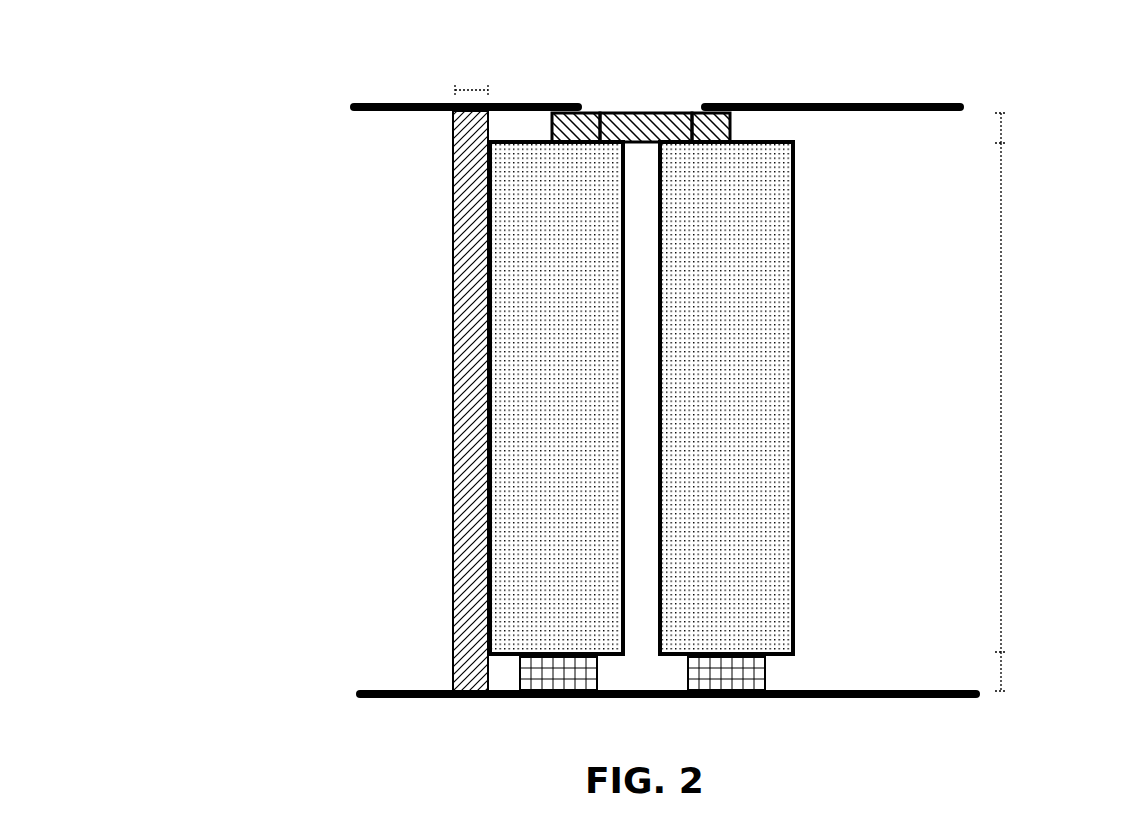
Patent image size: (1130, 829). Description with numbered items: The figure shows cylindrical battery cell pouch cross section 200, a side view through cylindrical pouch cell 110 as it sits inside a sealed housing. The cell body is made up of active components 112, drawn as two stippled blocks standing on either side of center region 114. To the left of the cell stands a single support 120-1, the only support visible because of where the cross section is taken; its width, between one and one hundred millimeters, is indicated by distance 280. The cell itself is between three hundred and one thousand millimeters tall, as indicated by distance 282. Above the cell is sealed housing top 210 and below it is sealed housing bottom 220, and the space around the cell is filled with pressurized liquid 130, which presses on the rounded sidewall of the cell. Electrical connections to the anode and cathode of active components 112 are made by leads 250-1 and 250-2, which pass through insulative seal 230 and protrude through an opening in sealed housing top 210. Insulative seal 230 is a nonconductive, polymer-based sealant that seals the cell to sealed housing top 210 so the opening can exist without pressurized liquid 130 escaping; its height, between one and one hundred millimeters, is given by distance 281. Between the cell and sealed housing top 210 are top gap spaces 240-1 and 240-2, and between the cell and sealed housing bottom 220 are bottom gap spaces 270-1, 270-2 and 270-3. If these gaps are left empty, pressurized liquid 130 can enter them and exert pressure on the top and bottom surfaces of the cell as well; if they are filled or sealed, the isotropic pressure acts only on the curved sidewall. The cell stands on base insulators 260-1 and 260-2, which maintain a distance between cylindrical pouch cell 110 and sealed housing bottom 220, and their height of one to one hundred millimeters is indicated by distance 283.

The cylindrical battery cell pouch cross section 200 is at (213, 84).
The cylindrical pouch cell 110 is at (862, 181).
The active components 112 is at (506, 214).
The center region 114 is at (628, 292).
The support 120-1 is at (451, 257).
The pressurized liquid 130 is at (369, 366).
The sealed housing top 210 is at (412, 104).
The sealed housing bottom 220 is at (376, 700).
The insulative seal 230 is at (665, 113).
The top gap space 240-1 is at (520, 124).
The top gap space 240-2 is at (771, 124).
The lead 250-1 is at (600, 113).
The lead 250-2 is at (692, 113).
The base insulator 260-1 is at (552, 677).
The base insulator 260-2 is at (732, 678).
The bottom gap space 270-1 is at (496, 675).
The bottom gap space 270-2 is at (624, 675).
The bottom gap space 270-3 is at (777, 675).
The distance 280 is at (462, 87).
The distance 281 is at (1001, 123).
The distance 282 is at (1001, 245).
The distance 283 is at (1001, 665).